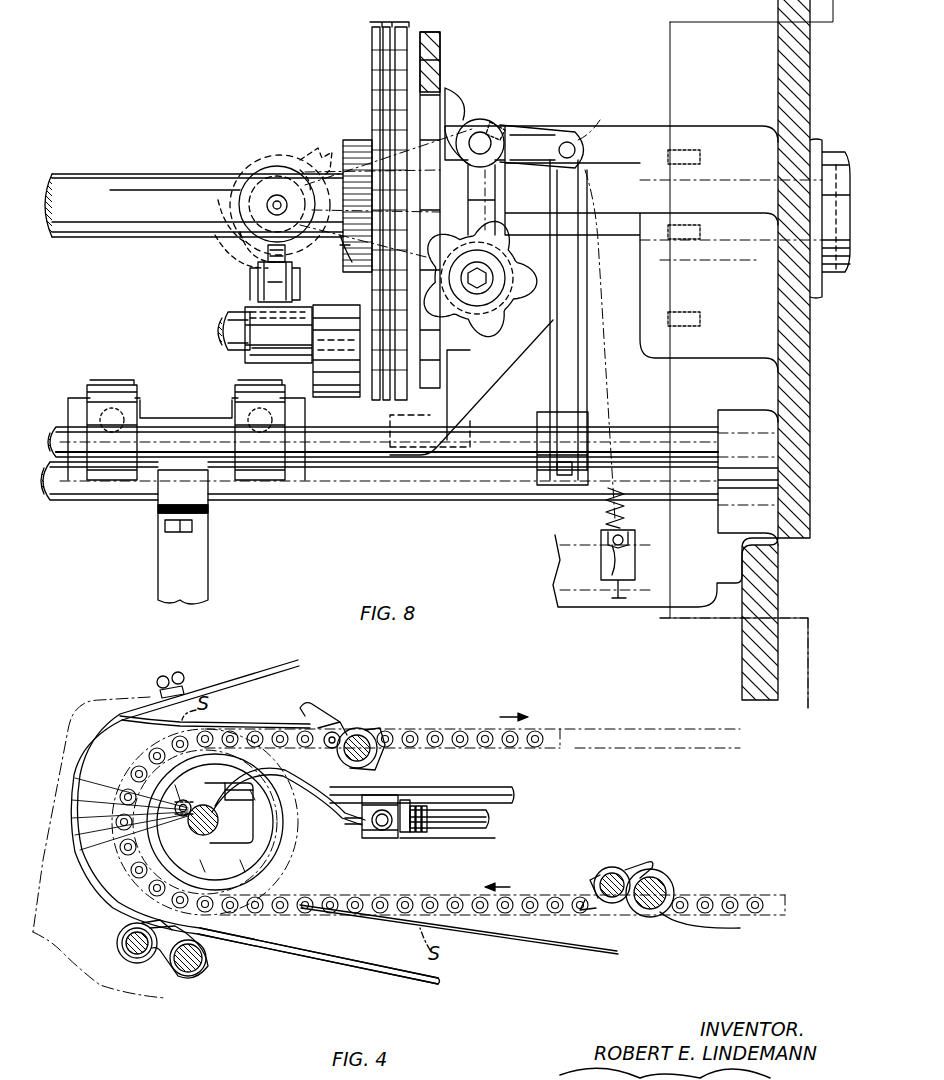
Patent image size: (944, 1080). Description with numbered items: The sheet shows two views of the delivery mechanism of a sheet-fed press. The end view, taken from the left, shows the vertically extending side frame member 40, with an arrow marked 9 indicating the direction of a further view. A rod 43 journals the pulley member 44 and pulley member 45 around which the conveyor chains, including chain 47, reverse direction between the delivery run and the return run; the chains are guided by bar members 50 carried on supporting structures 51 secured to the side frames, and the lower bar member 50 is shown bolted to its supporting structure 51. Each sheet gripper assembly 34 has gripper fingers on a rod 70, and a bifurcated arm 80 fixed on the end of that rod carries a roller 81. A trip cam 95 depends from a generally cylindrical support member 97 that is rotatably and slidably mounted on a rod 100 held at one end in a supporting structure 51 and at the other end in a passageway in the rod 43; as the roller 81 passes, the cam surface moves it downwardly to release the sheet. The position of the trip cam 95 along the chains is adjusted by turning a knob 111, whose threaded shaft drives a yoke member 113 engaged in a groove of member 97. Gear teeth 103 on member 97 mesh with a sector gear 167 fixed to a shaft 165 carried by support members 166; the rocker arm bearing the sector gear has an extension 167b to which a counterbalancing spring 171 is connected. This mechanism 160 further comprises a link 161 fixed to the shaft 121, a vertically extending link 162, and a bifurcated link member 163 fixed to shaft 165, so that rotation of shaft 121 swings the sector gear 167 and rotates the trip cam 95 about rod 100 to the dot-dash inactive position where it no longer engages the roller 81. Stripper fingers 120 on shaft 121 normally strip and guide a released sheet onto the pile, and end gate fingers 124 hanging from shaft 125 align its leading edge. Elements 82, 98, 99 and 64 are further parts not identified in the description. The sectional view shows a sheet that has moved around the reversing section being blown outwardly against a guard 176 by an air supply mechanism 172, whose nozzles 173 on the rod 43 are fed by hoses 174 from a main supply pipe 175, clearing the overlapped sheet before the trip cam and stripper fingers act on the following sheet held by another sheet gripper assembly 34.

In FIG. 8, the rod 43 is at (130, 184).
In FIG. 4, the rod 43 is at (215, 832).
In FIG. 8, the cylindrical support member 97 is at (262, 172).
In FIG. 8, the rod 100 is at (266, 205).
In FIG. 8, the gear teeth 103 is at (286, 158).
In FIG. 8, the cam follower 82 is at (280, 157).
In FIG. 8, the sector gear 167 is at (320, 150).
In FIG. 4, the guard 176 is at (150, 704).
In FIG. 8, the cam surface 99 is at (240, 240).
In FIG. 8, the trip cam 95 is at (265, 258).
In FIG. 8, the pin 98 is at (288, 258).
In FIG. 8, the yoke member 113 is at (334, 255).
In FIG. 8, the bifurcated arm 80 is at (258, 300).
In FIG. 8, the roller 81 is at (272, 302).
In FIG. 8, the rod 70 is at (228, 330).
In FIG. 8, the gear 64 is at (318, 396).
In FIG. 8, the pulley member 44 is at (440, 35).
In FIG. 8, the side frame member 40 is at (742, 640).
In FIG. 8, the section line 9 is at (785, 707).
In FIG. 8, the mechanism 160 is at (476, 108).
In FIG. 8, the shaft 165 is at (484, 136).
In FIG. 8, the bifurcated link member 163 is at (530, 140).
In FIG. 8, the rocker arm extension 167b is at (596, 122).
In FIG. 8, the support members 166 is at (483, 208).
In FIG. 8, the knob 111 is at (510, 366).
In FIG. 8, the supporting structure 51 is at (470, 404).
In FIG. 8, the link 162 is at (578, 210).
In FIG. 8, the link 161 is at (590, 422).
In FIG. 8, the counterbalancing spring 171 is at (608, 388).
In FIG. 8, the bar members 50 is at (354, 498).
In FIG. 8, the shaft 121 is at (452, 462).
In FIG. 4, the shaft 121 is at (138, 962).
In FIG. 8, the shaft 125 is at (243, 492).
In FIG. 8, the stripper fingers 120 is at (248, 392).
In FIG. 4, the stripper fingers 120 is at (262, 955).
In FIG. 8, the end gate fingers 124 is at (205, 545).
In FIG. 4, the pulley member 45 is at (276, 855).
In FIG. 4, the chain 47 is at (530, 905).
In FIG. 4, the air nozzles 173 is at (183, 816).
In FIG. 4, the supply hoses 174 is at (326, 822).
In FIG. 4, the sheet gripper assembly 34 is at (330, 714).
In FIG. 4, the air supply mechanism 172 is at (342, 834).
In FIG. 4, the main supply pipe 175 is at (455, 836).